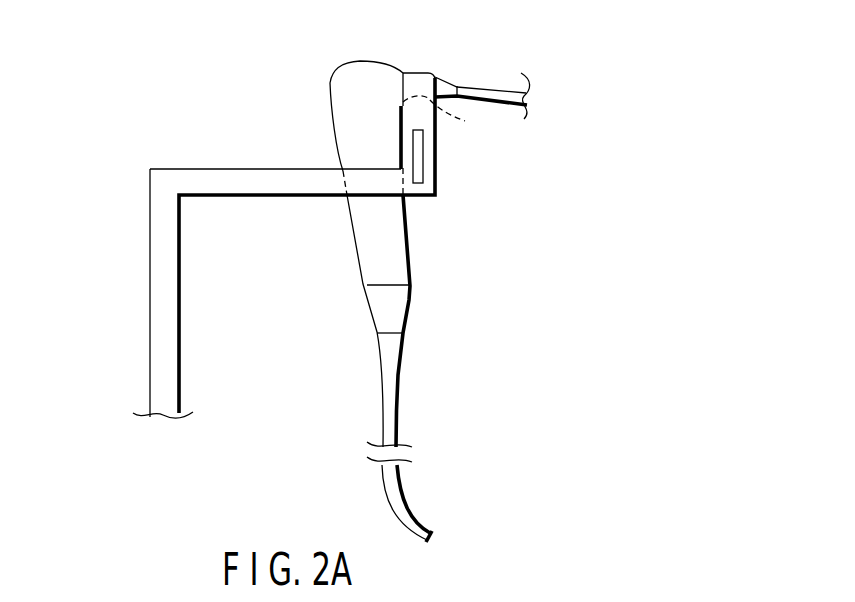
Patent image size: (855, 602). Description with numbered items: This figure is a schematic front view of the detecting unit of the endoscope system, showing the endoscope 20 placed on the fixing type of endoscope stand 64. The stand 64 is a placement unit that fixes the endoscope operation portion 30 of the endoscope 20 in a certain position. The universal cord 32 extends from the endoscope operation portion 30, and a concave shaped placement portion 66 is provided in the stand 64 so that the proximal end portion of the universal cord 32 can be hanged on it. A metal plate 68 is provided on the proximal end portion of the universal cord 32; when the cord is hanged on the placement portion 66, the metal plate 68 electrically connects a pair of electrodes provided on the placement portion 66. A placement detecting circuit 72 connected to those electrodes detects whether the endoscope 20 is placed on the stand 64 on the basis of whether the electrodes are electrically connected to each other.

The endoscope 20 is at (346, 274).
The endoscope operation portion 30 is at (367, 80).
The universal cord 32 is at (487, 82).
The fixing type of endoscope stand 64 is at (115, 223).
The placement portion 66 is at (415, 78).
The metal plate 68 is at (447, 117).
The placement detecting circuit 72 is at (423, 167).